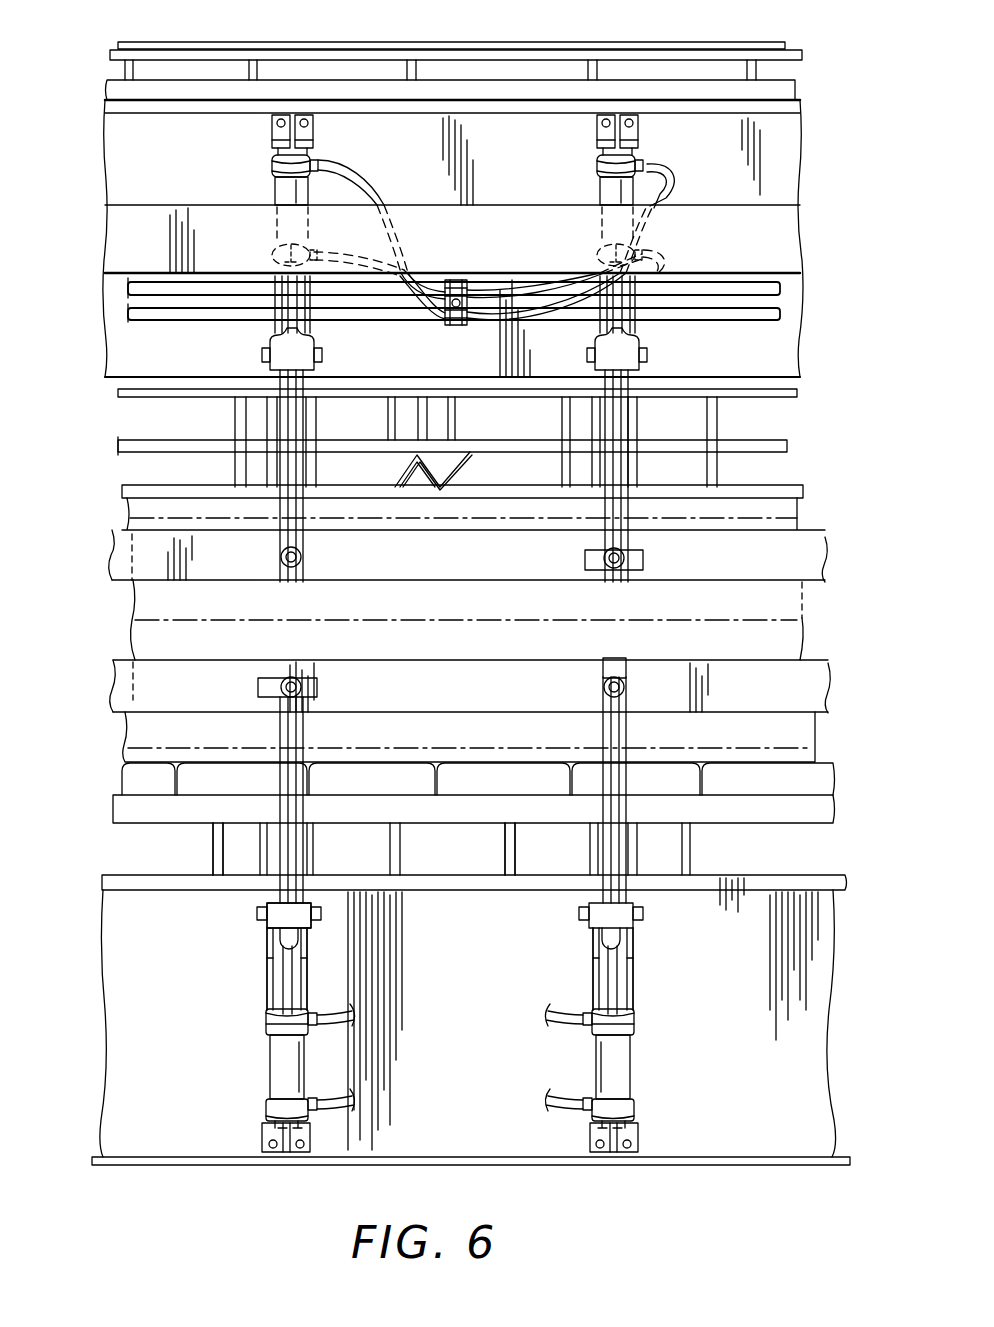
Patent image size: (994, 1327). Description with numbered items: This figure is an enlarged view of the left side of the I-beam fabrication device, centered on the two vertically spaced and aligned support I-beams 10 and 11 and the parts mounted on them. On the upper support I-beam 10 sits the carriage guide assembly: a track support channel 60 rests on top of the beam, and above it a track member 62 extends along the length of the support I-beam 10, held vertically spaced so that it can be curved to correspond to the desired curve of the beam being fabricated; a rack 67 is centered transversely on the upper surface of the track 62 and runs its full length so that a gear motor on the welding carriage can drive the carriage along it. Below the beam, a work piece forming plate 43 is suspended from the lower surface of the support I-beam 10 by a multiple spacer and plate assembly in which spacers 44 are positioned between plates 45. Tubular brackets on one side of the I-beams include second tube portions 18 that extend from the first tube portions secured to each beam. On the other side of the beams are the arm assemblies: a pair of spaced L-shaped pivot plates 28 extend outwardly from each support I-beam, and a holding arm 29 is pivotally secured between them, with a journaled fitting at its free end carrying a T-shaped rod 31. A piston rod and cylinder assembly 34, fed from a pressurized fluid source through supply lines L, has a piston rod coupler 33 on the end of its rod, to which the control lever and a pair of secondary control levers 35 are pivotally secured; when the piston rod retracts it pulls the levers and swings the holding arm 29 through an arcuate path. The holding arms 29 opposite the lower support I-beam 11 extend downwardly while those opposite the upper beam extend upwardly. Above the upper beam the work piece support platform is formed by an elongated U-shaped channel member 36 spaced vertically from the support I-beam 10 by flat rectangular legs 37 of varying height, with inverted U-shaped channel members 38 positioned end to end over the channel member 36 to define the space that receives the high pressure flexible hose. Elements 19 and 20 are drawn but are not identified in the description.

The support I-beam 10 is at (797, 152).
The support I-beam 11 is at (455, 985).
The second tube portion 18 is at (309, 431).
The upper platen 19 is at (112, 557).
The lower platen 20 is at (125, 688).
The L-shaped pivot plates 28 is at (307, 978).
The holding arm 29 is at (296, 858).
The T-shaped rod 31 is at (302, 557).
The piston rod coupler 33 is at (283, 913).
The piston rod and cylinder assembly 34 is at (276, 190).
The secondary control levers 35 is at (314, 908).
The elongated U-shaped channel member 36 is at (130, 806).
The flat rectangular legs 37 is at (213, 838).
The inverted U-shaped channel members 38 is at (140, 782).
The work piece forming plate 43 is at (805, 492).
The spacers 44 is at (233, 425).
The plates 45 is at (538, 394).
The track support channel 60 is at (795, 94).
The track member 62 is at (802, 54).
The rack 67 is at (587, 44).
The supply lines L is at (665, 175).